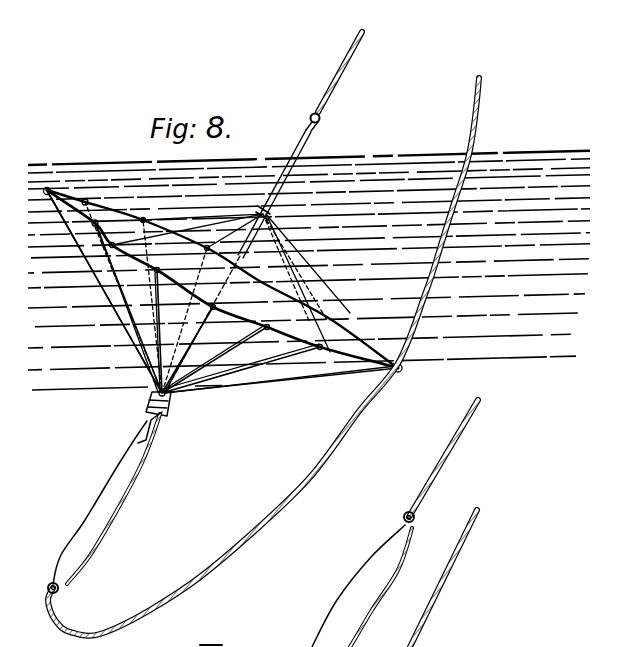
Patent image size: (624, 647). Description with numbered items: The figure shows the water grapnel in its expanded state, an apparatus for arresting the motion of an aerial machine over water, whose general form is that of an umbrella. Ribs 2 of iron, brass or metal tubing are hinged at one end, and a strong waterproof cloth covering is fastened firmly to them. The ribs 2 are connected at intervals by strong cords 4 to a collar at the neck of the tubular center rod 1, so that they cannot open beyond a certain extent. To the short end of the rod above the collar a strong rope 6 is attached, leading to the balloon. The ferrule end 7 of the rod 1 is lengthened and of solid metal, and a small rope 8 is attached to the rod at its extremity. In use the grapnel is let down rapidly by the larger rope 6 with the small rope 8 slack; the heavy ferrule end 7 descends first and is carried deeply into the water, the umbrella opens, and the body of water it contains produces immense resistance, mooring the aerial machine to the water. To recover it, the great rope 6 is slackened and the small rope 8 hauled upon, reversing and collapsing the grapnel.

The center rod 1 is at (223, 331).
The ribs 2 is at (222, 294).
The cords 4 is at (231, 269).
The rope 6 is at (334, 81).
The ferrule end 7 is at (231, 529).
The small rope 8 is at (263, 362).